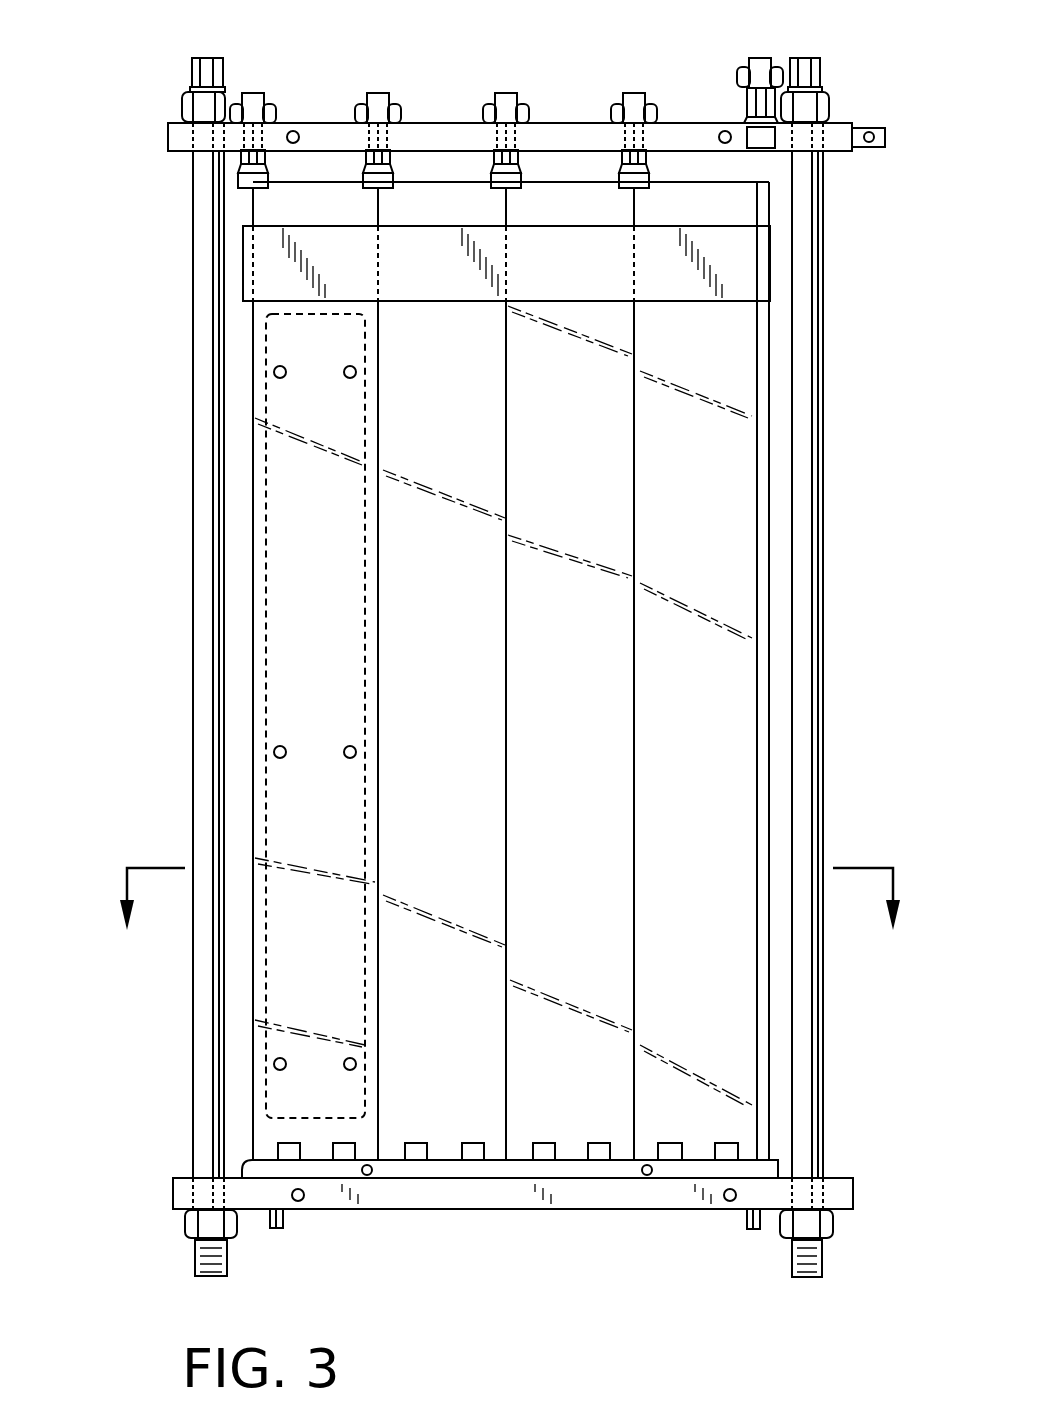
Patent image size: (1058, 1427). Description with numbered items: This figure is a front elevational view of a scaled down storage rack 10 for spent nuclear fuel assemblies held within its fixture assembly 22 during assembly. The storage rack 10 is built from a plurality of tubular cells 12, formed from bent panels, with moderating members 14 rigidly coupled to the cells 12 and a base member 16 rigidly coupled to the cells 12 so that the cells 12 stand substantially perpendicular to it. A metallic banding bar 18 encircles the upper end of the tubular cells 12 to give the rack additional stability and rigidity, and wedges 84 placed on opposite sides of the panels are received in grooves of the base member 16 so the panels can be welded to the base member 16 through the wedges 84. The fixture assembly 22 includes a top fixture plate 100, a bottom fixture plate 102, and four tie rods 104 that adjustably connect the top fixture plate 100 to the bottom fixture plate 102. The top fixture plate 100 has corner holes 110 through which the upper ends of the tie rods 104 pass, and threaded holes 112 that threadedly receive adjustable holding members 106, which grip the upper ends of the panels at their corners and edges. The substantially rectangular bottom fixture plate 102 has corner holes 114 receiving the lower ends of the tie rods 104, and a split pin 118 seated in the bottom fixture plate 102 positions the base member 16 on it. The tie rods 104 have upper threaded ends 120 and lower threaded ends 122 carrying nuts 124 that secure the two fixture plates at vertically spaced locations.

The storage rack 10 is at (230, 273).
The tubular cells 12 is at (303, 661).
The moderating members 14 is at (266, 572).
The base member 16 is at (240, 1168).
The banding bar 18 is at (781, 248).
The fixture assembly 22 is at (160, 110).
The wedges 84 is at (472, 1142).
The top fixture plate 100 is at (463, 132).
The bottom fixture plate 102 is at (455, 1210).
The tie rods 104 is at (216, 58).
The adjustable holding members 106 is at (268, 110).
The holes 110 is at (210, 136).
The threaded holes 112 is at (390, 138).
The holes 114 is at (195, 1200).
The split pin 118 is at (283, 1222).
The upper threaded ends 120 is at (194, 86).
The lower threaded ends 122 is at (196, 1262).
The nuts 124 is at (226, 92).